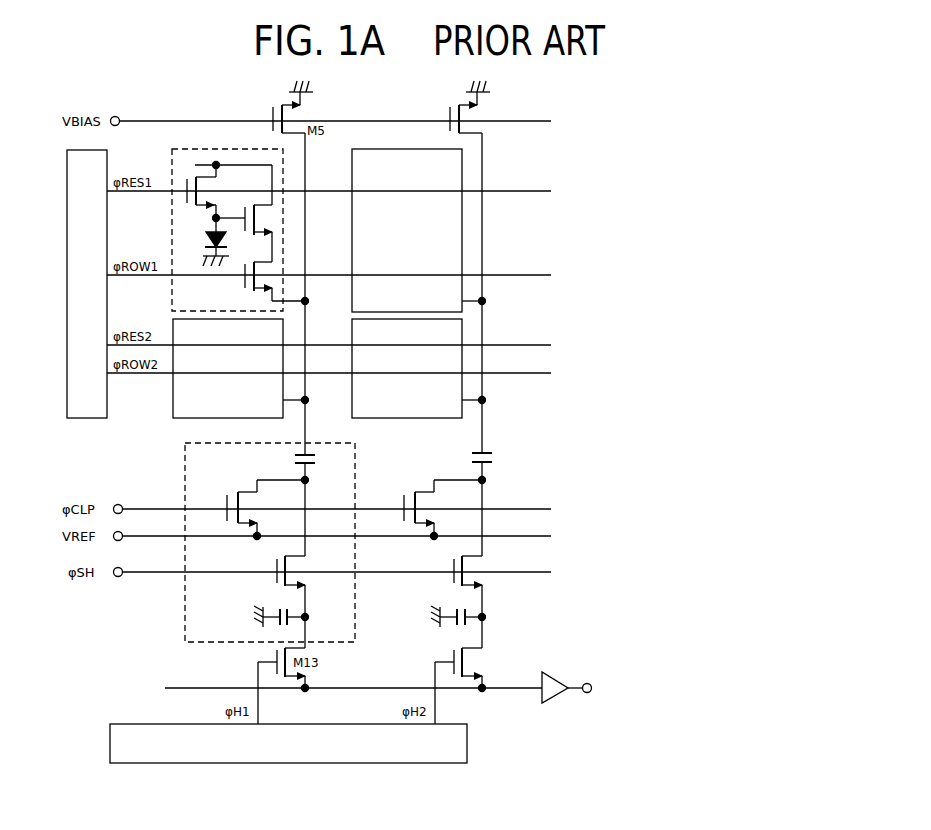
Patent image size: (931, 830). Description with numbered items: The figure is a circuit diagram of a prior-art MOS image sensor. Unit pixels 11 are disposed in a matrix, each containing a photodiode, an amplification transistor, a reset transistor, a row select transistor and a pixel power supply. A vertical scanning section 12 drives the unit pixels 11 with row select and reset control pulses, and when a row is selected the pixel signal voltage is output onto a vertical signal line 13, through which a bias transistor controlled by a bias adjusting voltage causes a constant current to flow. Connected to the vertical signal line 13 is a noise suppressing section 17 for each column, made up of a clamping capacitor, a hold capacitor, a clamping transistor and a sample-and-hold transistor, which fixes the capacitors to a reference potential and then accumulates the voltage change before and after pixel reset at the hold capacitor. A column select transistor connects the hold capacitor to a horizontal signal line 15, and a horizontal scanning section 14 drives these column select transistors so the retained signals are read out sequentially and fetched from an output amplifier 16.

The unit pixel 11 is at (172, 300).
The vertical scanning section 12 is at (90, 418).
The vertical signal line 13 is at (306, 424).
The horizontal scanning section 14 is at (345, 763).
The horizontal signal line 15 is at (512, 690).
The output amplifier 16 is at (556, 702).
The noise suppressing section 17 is at (185, 619).